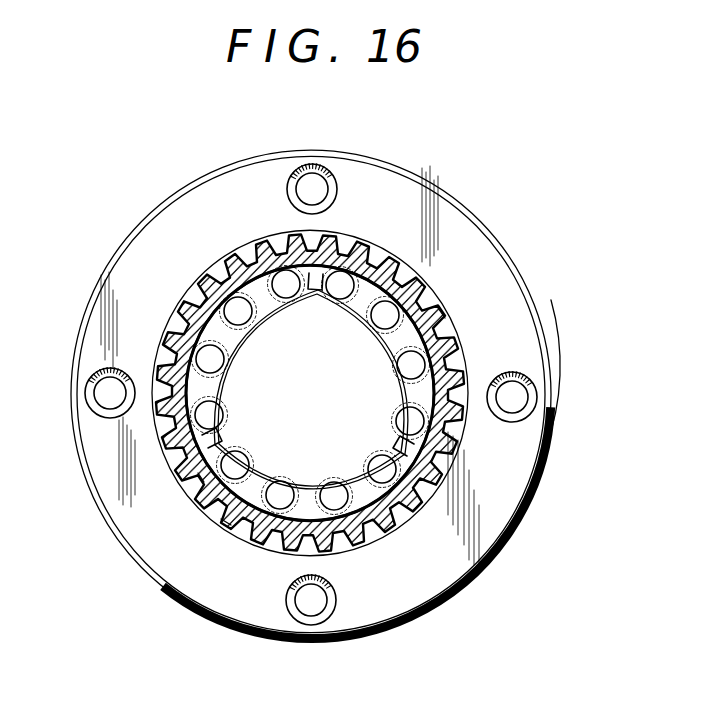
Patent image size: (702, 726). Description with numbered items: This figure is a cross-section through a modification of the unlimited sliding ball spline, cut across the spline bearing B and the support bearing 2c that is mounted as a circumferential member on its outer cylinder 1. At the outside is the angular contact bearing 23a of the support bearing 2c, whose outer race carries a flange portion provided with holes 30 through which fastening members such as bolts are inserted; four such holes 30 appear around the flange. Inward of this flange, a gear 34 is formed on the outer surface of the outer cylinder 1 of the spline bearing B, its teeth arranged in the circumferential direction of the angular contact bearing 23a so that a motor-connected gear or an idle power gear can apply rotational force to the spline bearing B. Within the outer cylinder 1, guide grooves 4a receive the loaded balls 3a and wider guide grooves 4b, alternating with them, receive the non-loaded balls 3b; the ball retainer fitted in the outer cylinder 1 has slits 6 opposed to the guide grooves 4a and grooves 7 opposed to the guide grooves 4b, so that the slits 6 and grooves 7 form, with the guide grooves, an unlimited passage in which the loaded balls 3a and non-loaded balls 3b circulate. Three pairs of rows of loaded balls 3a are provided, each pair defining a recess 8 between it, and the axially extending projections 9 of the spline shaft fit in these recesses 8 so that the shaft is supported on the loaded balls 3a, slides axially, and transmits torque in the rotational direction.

The outer cylinder 1 is at (373, 537).
The support bearing 2c is at (556, 368).
The loaded balls 3a is at (258, 246).
The non-loaded balls 3b is at (446, 367).
The guide grooves 4a is at (196, 441).
The guide grooves 4b is at (432, 315).
The slits 6 is at (200, 497).
The grooves 7 is at (347, 540).
The recesses 8 is at (316, 289).
The projections 9 is at (302, 294).
The angular contact bearing 23a is at (558, 452).
The holes 30 is at (326, 178).
The gear 34 is at (456, 313).
The spline bearing B is at (230, 522).